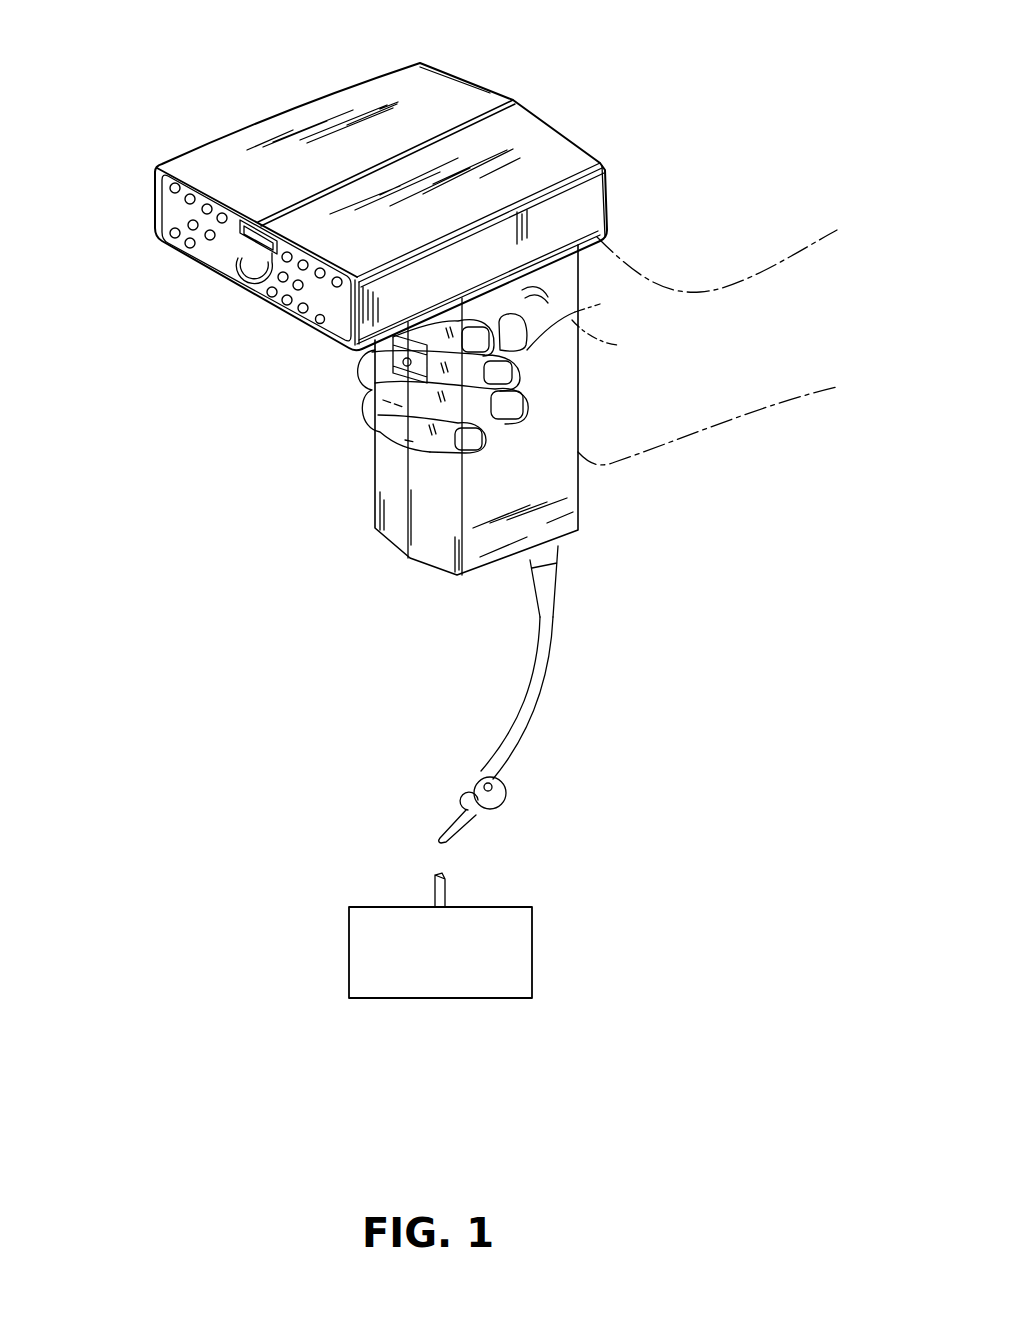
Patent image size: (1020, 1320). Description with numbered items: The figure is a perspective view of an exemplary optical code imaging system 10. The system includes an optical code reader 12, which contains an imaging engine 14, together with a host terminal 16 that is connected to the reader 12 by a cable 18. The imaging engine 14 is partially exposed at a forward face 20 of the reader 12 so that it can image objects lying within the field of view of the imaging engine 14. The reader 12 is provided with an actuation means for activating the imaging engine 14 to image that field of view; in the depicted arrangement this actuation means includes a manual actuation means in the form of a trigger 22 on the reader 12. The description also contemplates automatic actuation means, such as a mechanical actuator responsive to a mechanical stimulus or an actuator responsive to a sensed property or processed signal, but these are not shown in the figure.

The optical code imaging system 10 is at (84, 49).
The optical code reader 12 is at (372, 201).
The imaging engine 14 is at (315, 333).
The host terminal 16 is at (533, 960).
The cable 18 is at (557, 593).
The forward face 20 is at (207, 252).
The trigger 22 is at (376, 364).